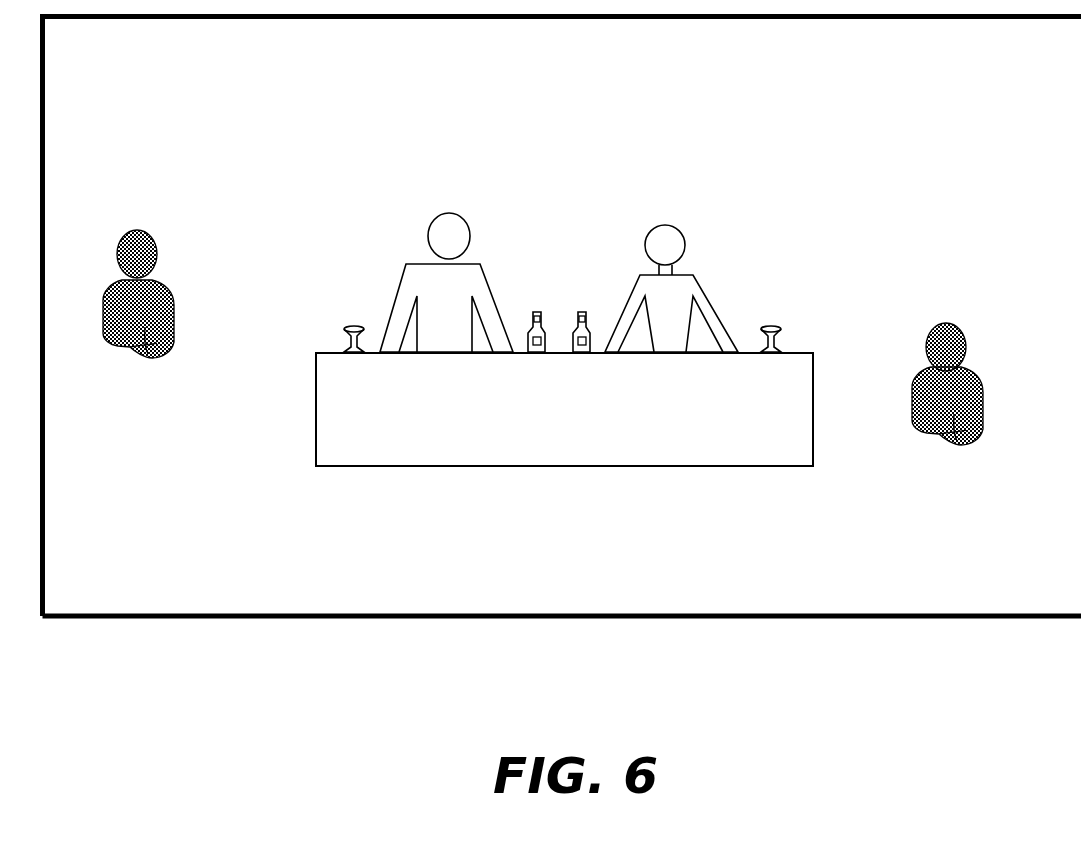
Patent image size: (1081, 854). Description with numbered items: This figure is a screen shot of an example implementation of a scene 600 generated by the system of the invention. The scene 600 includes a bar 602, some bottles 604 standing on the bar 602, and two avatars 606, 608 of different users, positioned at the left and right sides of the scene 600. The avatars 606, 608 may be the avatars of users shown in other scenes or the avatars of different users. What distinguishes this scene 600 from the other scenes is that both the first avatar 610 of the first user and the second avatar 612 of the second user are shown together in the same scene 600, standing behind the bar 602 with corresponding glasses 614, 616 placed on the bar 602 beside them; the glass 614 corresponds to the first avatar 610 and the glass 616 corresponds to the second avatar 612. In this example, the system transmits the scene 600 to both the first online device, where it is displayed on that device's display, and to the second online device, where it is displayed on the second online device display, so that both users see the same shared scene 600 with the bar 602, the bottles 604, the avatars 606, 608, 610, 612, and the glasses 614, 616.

The scene 600 is at (1062, 586).
The bar 602 is at (632, 425).
The bottles 604 is at (577, 328).
The avatar of a user 606 is at (157, 342).
The avatar of a user 608 is at (966, 416).
The first avatar 610 is at (447, 212).
The second avatar 612 is at (673, 225).
The glass 614 is at (358, 350).
The glass 616 is at (774, 348).